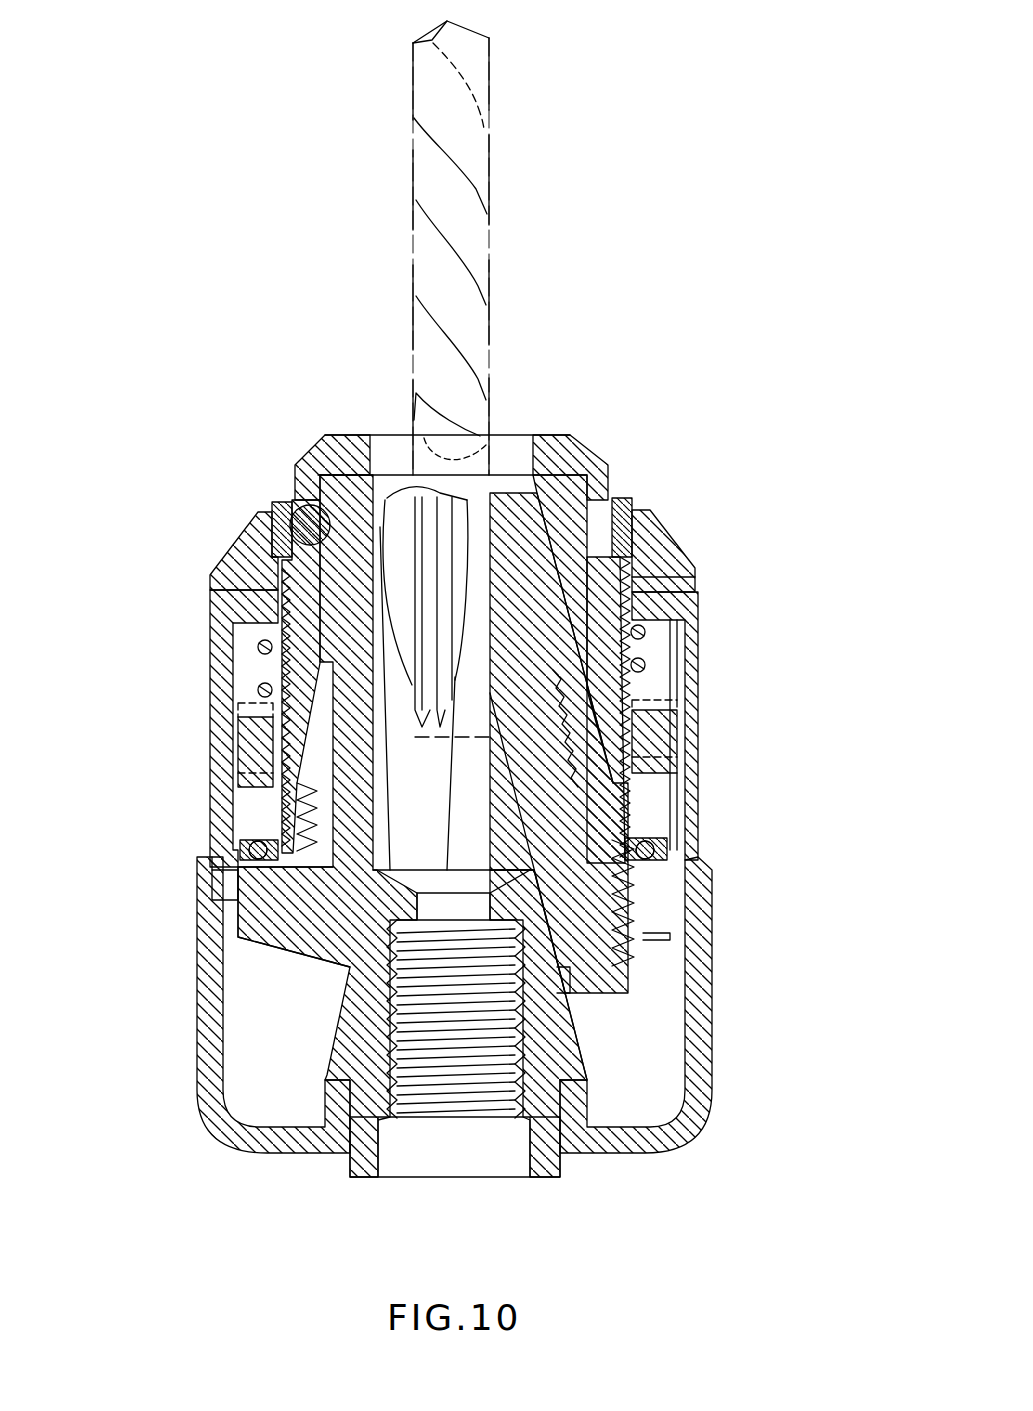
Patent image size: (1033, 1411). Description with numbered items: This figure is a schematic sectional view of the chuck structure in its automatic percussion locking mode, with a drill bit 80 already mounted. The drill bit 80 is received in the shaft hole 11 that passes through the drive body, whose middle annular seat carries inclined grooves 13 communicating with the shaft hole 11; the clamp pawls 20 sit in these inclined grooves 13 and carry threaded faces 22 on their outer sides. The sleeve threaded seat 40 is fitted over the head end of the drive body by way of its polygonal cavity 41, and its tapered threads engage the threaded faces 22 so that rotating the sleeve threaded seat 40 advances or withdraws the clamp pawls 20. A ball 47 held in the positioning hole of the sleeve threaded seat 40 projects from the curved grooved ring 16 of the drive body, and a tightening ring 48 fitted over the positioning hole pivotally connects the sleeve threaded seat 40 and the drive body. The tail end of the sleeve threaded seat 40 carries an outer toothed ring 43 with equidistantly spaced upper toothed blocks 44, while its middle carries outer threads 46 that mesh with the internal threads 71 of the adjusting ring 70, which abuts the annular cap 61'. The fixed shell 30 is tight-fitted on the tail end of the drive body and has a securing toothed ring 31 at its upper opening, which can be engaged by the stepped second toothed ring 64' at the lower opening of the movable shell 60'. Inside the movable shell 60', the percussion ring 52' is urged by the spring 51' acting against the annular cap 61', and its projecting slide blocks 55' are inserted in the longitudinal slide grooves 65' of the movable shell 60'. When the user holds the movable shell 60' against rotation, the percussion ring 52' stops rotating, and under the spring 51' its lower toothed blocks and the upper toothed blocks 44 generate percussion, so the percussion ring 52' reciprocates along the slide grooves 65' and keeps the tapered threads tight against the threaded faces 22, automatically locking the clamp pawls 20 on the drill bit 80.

The drill bit 80 is at (478, 64).
The sleeve threaded seat 40 is at (567, 433).
The polygonal cavity 41 is at (508, 446).
The curved grooved ring 16 is at (580, 517).
The tightening ring 48 is at (623, 510).
The ball 47 is at (297, 500).
The adjusting ring 70 is at (243, 545).
The internal threads 71 is at (643, 580).
The outer threads 46 is at (632, 578).
The spring 51' is at (381, 703).
The annular cap 61' is at (723, 726).
The percussion ring 52' is at (462, 706).
The slide grooves 65' is at (737, 735).
The movable shell 60' is at (175, 728).
The slide blocks 55' is at (727, 735).
The outer toothed ring 43 is at (235, 832).
The upper toothed blocks 44 is at (680, 803).
The second toothed ring 64' is at (153, 896).
The securing toothed ring 31 is at (237, 905).
The fixed shell 30 is at (197, 985).
The inclined grooves 13 is at (667, 940).
The threaded faces 22 is at (640, 973).
The clamp pawls 20 is at (618, 1000).
The shaft hole 11 is at (415, 1147).